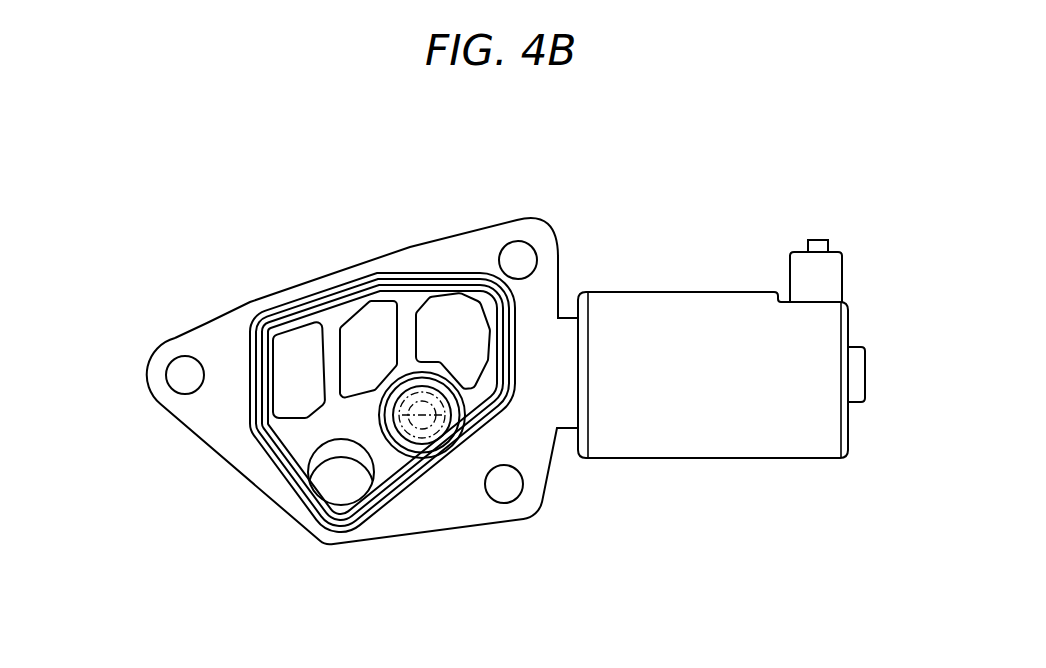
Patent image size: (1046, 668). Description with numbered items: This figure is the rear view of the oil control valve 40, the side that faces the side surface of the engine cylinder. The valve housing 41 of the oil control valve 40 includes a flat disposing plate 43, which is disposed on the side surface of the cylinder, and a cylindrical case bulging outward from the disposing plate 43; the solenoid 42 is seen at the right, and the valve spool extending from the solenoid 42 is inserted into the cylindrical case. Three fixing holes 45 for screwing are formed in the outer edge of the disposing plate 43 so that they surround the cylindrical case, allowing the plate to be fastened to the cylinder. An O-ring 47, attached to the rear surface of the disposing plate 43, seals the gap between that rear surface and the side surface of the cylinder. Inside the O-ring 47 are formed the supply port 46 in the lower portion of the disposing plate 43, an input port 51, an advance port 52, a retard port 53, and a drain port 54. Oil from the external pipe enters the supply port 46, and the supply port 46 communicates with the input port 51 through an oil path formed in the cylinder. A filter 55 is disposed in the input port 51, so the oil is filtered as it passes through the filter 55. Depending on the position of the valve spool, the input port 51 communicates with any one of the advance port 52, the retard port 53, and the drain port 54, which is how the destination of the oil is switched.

The oil control valve 40 is at (793, 182).
The valve housing 41 is at (382, 247).
The solenoid 42 is at (733, 450).
The disposing plate 43 is at (277, 293).
The fixing holes 45 is at (178, 375).
The supply port 46 is at (327, 488).
The O-ring 47 is at (255, 443).
The input port 51 is at (414, 426).
The advance port 52 is at (378, 306).
The retard port 53 is at (456, 309).
The drain port 54 is at (280, 350).
The filter 55 is at (450, 415).